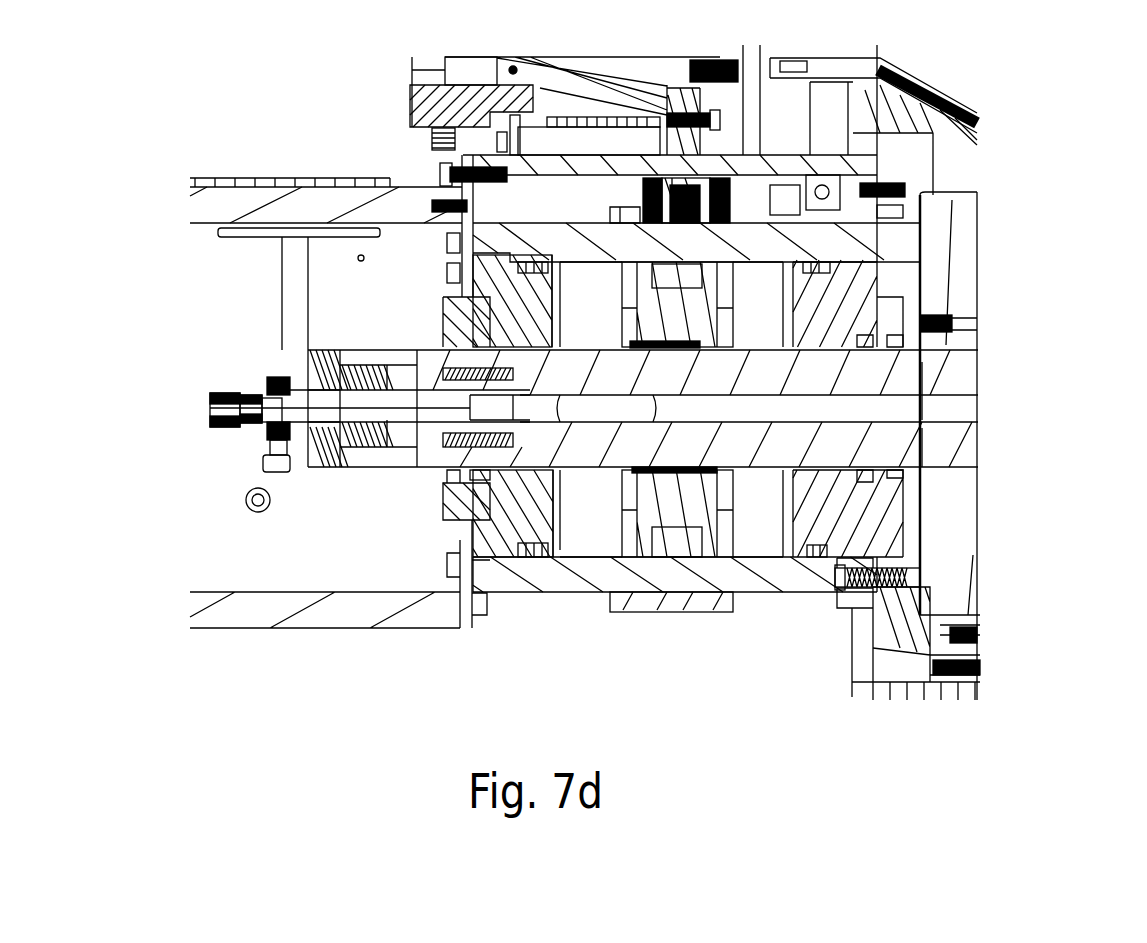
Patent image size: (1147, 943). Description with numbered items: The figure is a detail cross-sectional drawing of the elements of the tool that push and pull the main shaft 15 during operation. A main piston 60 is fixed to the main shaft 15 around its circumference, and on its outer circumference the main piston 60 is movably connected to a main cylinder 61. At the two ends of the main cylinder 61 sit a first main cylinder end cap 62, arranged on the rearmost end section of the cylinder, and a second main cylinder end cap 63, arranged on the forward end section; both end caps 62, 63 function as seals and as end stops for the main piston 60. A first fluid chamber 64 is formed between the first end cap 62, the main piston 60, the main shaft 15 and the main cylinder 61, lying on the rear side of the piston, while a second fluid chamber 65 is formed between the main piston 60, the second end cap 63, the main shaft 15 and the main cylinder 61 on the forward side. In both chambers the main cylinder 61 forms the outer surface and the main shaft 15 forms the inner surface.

The main shaft 15 is at (953, 443).
The main piston 60 is at (695, 495).
The main cylinder 61 is at (553, 592).
The first main cylinder end cap 62 is at (500, 510).
The second main cylinder end cap 63 is at (838, 508).
The first fluid chamber 64 is at (597, 512).
The second fluid chamber 65 is at (760, 512).